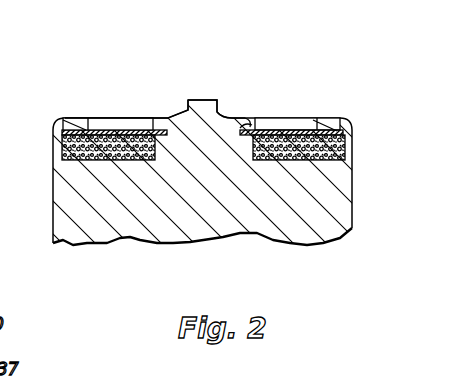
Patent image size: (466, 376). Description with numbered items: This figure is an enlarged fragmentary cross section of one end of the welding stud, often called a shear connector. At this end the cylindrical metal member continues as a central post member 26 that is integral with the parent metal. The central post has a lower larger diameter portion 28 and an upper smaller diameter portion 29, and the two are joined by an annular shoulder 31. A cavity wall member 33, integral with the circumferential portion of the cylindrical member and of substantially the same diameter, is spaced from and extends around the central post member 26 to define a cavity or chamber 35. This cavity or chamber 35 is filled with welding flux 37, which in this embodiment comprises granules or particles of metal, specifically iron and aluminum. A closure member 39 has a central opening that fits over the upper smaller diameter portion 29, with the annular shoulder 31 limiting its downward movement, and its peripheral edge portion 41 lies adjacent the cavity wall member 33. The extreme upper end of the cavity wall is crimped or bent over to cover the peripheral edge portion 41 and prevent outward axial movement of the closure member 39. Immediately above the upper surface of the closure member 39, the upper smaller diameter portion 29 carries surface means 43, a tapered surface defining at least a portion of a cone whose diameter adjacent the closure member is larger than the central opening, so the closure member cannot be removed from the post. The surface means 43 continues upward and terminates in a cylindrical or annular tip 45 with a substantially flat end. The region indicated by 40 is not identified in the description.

The central post member 26 is at (205, 153).
The lower larger diameter portion 28 is at (177, 153).
The upper smaller diameter portion 29 is at (167, 118).
The annular shoulder 31 is at (252, 125).
The cavity wall member 33 is at (344, 131).
The cavity or chamber 35 is at (323, 148).
The welding flux 37 is at (63, 137).
The closure member 39 is at (300, 118).
The boss shoulder 40 is at (247, 118).
The peripheral edge portion 41 is at (338, 123).
The surface means 43 is at (225, 113).
The cylindrical or annular tip 45 is at (190, 110).